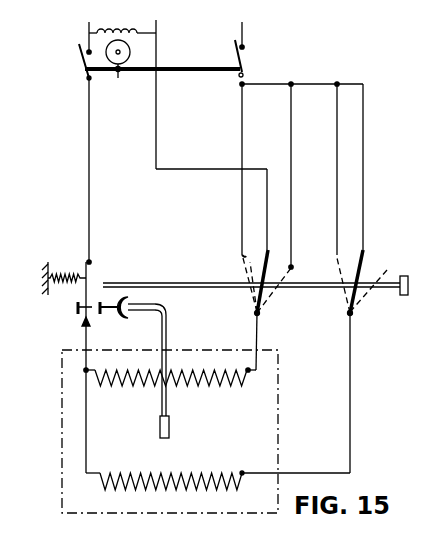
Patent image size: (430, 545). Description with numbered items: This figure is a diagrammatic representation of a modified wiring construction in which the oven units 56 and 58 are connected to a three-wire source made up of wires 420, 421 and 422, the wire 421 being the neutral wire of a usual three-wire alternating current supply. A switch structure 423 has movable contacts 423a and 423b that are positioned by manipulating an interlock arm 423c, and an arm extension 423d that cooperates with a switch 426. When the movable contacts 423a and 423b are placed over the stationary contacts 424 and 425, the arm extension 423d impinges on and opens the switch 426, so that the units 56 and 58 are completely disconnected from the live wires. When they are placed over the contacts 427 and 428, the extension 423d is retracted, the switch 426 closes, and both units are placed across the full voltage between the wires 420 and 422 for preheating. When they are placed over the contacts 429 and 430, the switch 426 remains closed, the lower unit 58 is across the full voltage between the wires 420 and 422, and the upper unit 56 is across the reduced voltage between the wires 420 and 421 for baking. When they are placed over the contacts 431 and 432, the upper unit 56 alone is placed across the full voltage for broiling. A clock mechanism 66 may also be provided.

The wire 420 is at (89, 25).
The wire 421 is at (156, 25).
The wire 422 is at (242, 32).
The clock mechanism 66 is at (128, 58).
The contact 427 is at (241, 254).
The contact 429 is at (266, 250).
The contact 431 is at (302, 186).
The contact 428 is at (336, 255).
The contact 430 is at (364, 258).
The stationary contact 425 is at (323, 274).
The stationary contact 424 is at (232, 278).
The arm extension 423d is at (178, 283).
The contact 432 is at (388, 270).
The movable contact 423a is at (254, 298).
The movable contact 423b is at (356, 298).
The interlock arm 423c is at (386, 289).
The switch structure 423 is at (330, 327).
The switch 426 is at (90, 273).
The oven unit 56 is at (190, 382).
The oven unit 58 is at (194, 472).